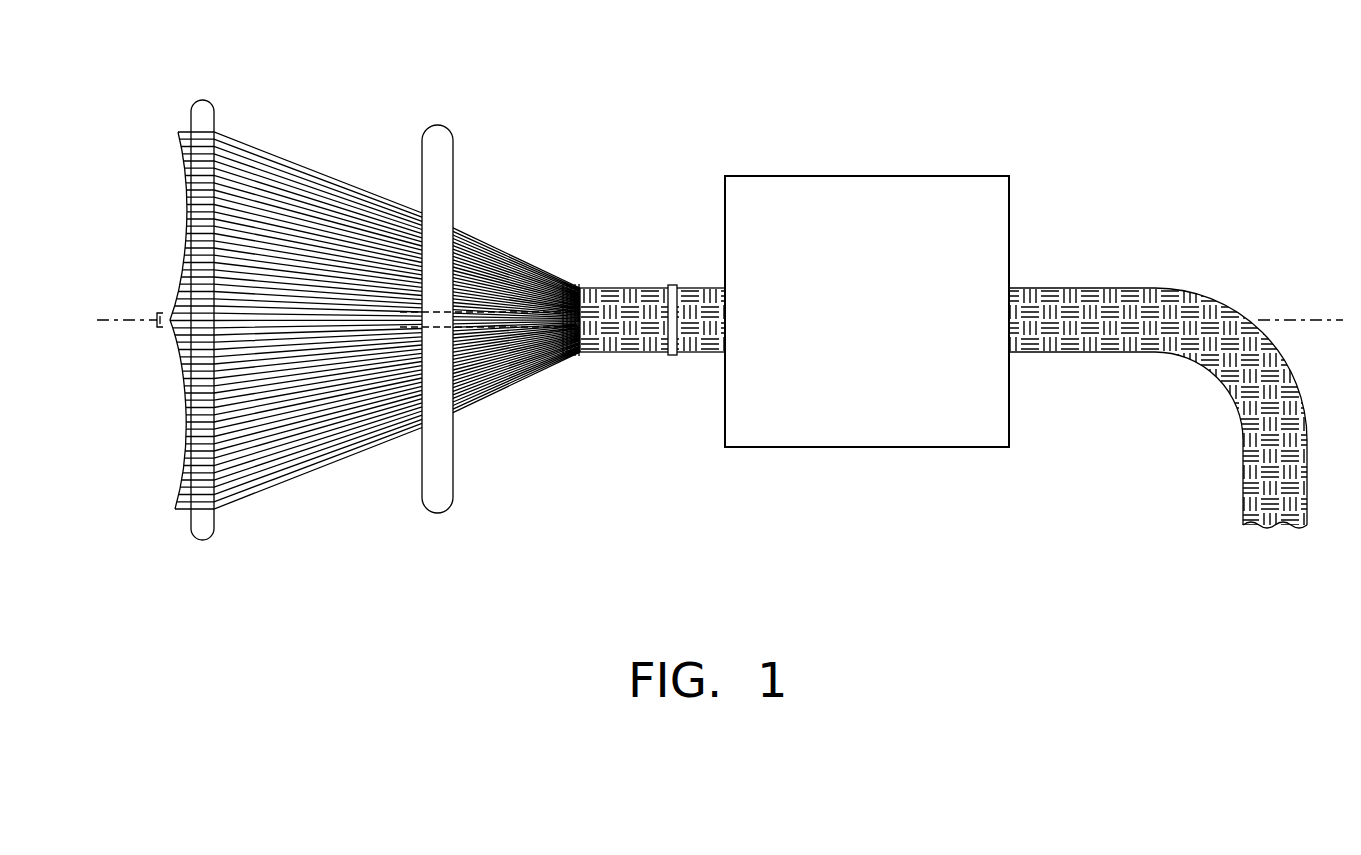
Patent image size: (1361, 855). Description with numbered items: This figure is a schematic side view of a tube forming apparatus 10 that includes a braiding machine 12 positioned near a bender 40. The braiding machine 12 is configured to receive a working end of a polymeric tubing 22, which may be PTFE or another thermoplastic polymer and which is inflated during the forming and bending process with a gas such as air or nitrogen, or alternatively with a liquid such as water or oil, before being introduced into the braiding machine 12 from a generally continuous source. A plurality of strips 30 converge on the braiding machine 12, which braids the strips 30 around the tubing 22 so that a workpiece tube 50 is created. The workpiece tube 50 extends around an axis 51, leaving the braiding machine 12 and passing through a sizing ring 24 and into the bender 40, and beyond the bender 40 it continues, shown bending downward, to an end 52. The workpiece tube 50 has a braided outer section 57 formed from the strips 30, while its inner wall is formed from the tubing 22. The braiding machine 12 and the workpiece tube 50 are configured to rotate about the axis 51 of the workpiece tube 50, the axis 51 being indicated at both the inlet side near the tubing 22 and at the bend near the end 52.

The tube forming apparatus 10 is at (890, 88).
The braiding machine 12 is at (437, 470).
The polymeric tubing 22 is at (163, 327).
The sizing ring 24 is at (672, 357).
The strips 30 is at (341, 130).
The bender 40 is at (881, 467).
The workpiece tube 50 is at (1255, 312).
The axis 51 is at (105, 320).
The end 52 is at (1243, 510).
The braided outer section 57 is at (605, 285).